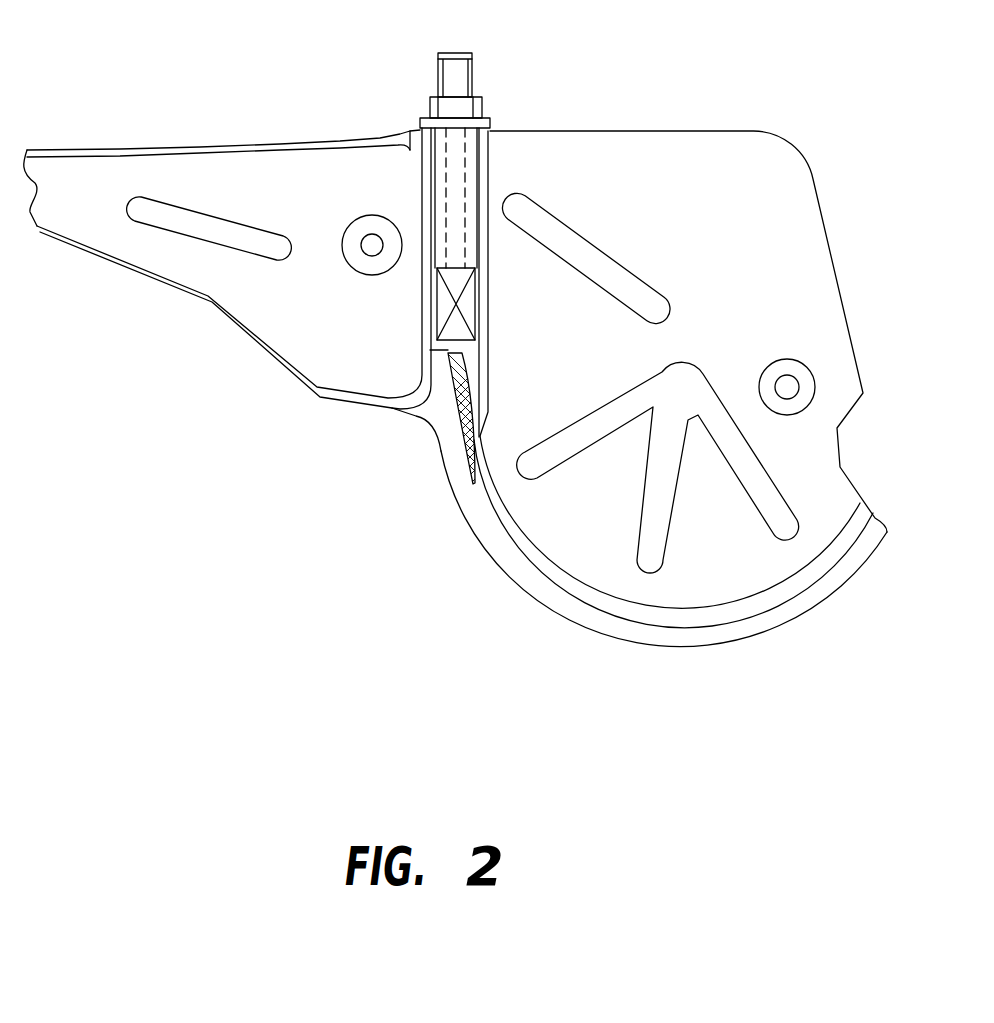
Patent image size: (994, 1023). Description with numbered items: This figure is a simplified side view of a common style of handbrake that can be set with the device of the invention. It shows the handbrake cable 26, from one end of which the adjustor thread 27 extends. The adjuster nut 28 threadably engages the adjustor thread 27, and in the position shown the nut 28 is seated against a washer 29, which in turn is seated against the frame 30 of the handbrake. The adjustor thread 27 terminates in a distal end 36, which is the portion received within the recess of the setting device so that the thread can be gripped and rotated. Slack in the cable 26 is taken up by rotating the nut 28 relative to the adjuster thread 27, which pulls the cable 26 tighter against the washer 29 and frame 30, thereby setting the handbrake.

The handbrake cable 26 is at (462, 438).
The adjustor thread 27 is at (440, 202).
The adjuster nut 28 is at (482, 100).
The washer 29 is at (420, 118).
The frame 30 is at (618, 131).
The distal end 36 is at (465, 53).